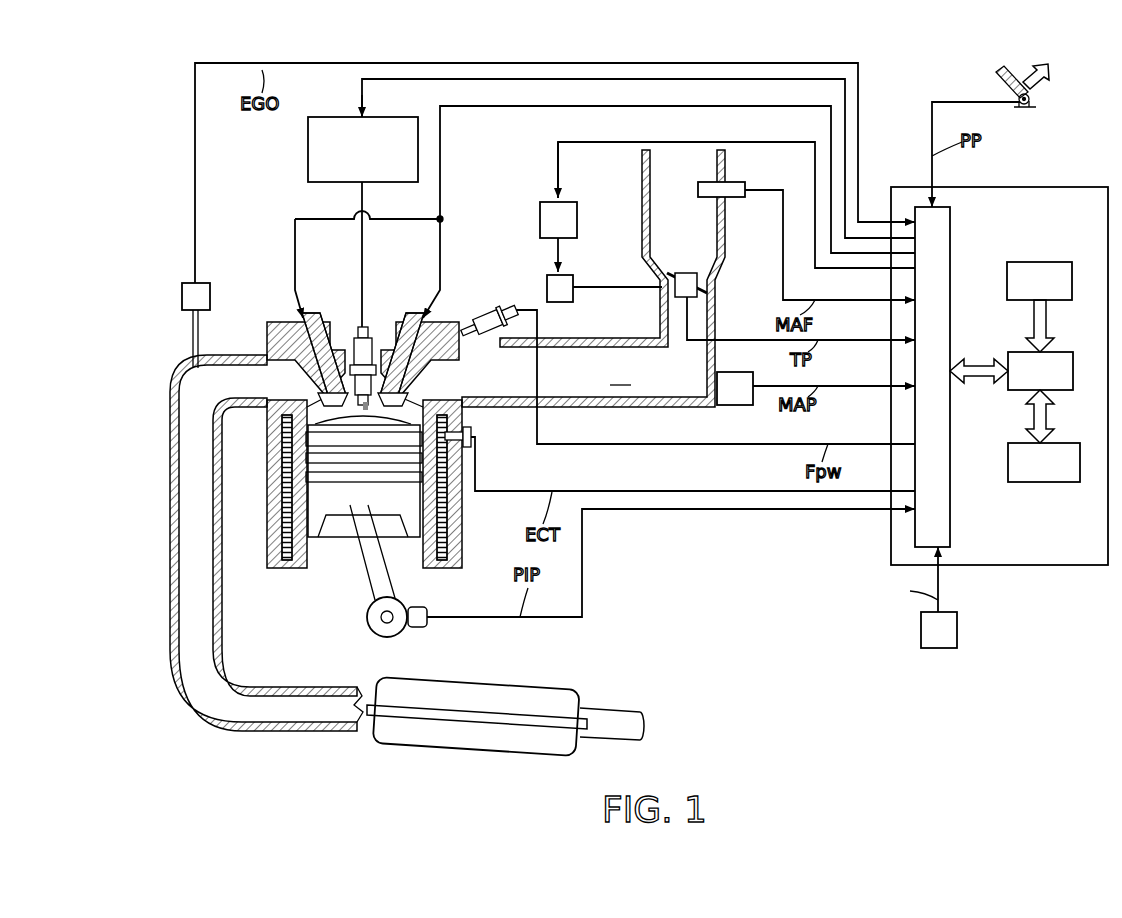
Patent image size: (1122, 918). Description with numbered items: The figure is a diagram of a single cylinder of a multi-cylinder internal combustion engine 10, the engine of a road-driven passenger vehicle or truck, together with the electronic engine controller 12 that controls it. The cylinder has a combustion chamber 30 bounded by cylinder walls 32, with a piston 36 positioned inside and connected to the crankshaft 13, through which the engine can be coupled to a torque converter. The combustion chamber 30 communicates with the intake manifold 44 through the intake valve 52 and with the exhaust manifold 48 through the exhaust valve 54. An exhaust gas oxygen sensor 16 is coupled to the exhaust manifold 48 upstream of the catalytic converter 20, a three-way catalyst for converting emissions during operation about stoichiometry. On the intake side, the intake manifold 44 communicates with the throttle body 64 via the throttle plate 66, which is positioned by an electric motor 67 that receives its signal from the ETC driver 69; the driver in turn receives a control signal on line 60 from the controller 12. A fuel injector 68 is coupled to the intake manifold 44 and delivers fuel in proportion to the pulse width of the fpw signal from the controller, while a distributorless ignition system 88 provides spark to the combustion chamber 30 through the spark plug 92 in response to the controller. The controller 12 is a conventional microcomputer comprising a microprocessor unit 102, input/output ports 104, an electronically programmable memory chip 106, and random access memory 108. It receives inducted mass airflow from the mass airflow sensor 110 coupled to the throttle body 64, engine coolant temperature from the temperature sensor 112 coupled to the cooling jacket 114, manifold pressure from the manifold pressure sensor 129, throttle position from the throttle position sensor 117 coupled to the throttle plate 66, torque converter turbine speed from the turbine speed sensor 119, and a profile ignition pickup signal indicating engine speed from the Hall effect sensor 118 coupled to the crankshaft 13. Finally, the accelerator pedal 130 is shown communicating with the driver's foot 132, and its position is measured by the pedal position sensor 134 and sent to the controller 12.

The internal combustion engine 10 is at (322, 628).
The electronic engine controller 12 is at (1062, 187).
The crankshaft 13 is at (378, 630).
The exhaust gas oxygen sensor 16 is at (203, 283).
The catalytic converter 20 is at (548, 678).
The combustion chamber 30 is at (348, 417).
The cylinder walls 32 is at (305, 570).
The piston 36 is at (362, 520).
The intake manifold 44 is at (593, 278).
The exhaust manifold 48 is at (207, 573).
The intake valve 52 is at (428, 383).
The exhaust valve 54 is at (327, 394).
The line 60 is at (655, 144).
The throttle body 64 is at (685, 158).
The throttle plate 66 is at (670, 275).
The electric motor 67 is at (573, 287).
The fuel injector 68 is at (495, 320).
The ETC driver 69 is at (565, 202).
The distributorless ignition system 88 is at (392, 117).
The spark plug 92 is at (368, 327).
The microprocessor unit 102 is at (1050, 352).
The input/output ports 104 is at (950, 230).
The electronic memory chip 106 is at (1040, 262).
The random access memory 108 is at (1068, 443).
The mass airflow sensor 110 is at (745, 185).
The temperature sensor 112 is at (472, 437).
The cooling jacket 114 is at (448, 522).
The throttle position sensor 117 is at (697, 273).
The Hall effect sensor 118 is at (428, 612).
The turbine speed sensor 119 is at (957, 618).
The MAP sensor 129 is at (730, 405).
The accelerator pedal 130 is at (998, 78).
The driver's foot 132 is at (1048, 70).
The pedal position sensor 134 is at (1033, 100).